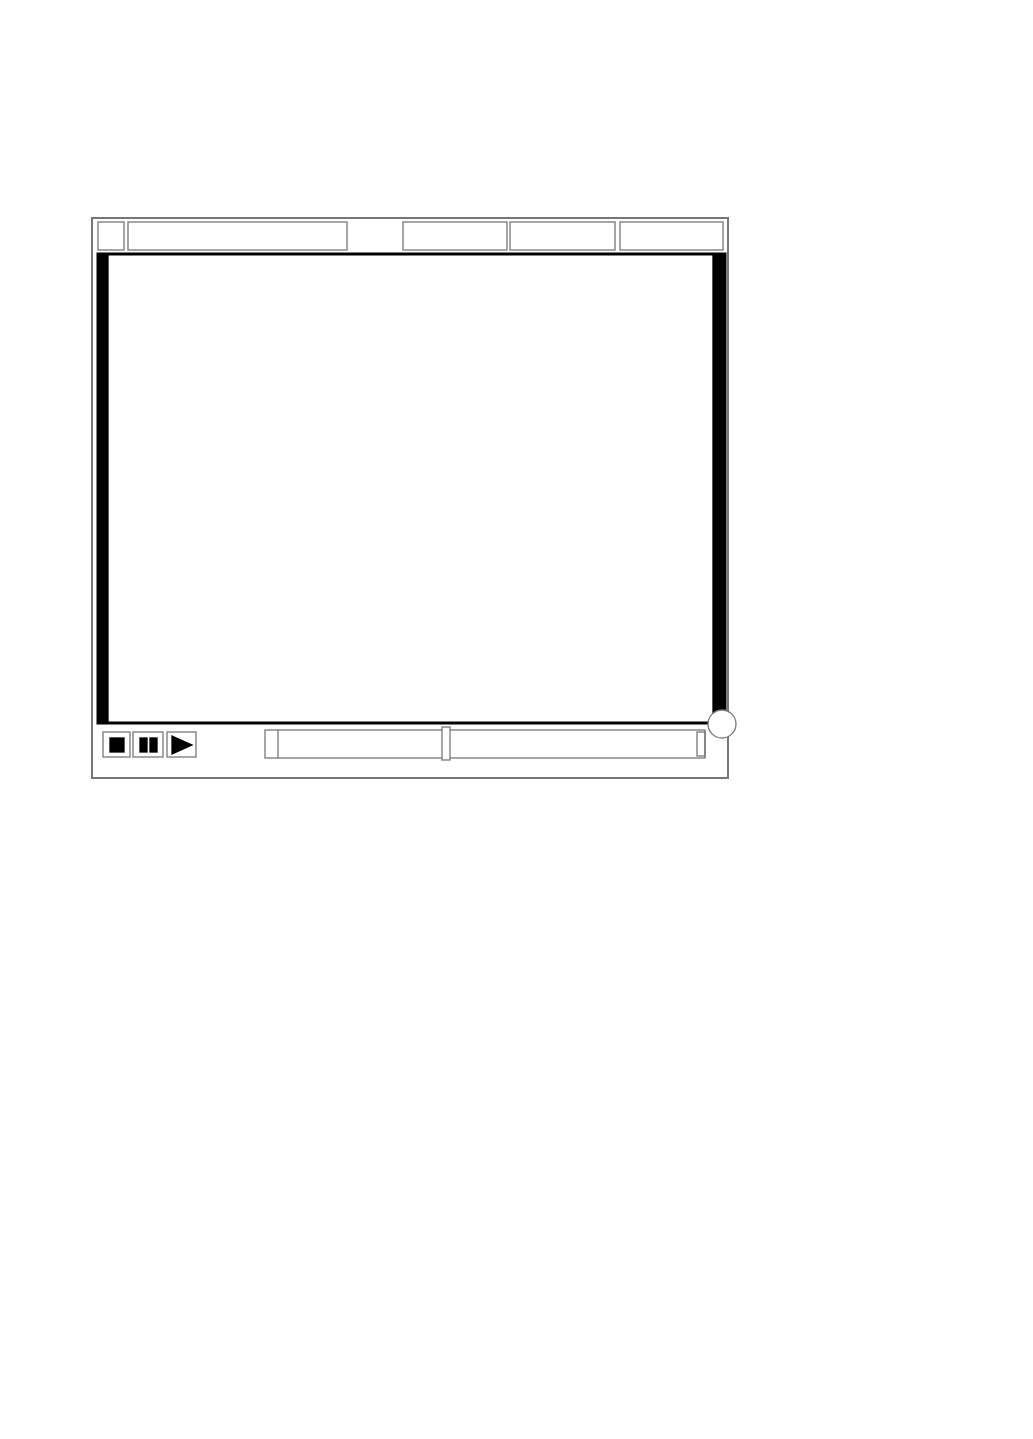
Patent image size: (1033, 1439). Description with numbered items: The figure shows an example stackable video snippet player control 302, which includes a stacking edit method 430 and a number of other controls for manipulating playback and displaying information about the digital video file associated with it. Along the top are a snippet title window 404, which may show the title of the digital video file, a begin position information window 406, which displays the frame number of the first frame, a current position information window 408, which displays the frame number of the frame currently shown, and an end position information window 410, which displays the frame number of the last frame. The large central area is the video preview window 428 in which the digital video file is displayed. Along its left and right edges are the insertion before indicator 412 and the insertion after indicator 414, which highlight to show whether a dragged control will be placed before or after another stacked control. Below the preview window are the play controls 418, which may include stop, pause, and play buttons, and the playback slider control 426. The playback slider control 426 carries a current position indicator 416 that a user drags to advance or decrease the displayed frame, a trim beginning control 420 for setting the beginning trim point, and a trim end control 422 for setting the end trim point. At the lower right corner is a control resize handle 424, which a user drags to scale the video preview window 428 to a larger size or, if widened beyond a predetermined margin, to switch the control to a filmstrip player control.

The stackable video snippet player control 302 is at (346, 220).
The stacking edit method 430 is at (509, 168).
The snippet title window 404 is at (294, 348).
The begin position information window 406 is at (487, 251).
The current position information window 408 is at (585, 230).
The end position information window 410 is at (675, 243).
The insertion before indicator 412 is at (330, 520).
The insertion after indicator 414 is at (713, 517).
The current position indicator 416 is at (485, 680).
The play controls 418 is at (155, 757).
The trim beginning control 420 is at (270, 757).
The trim end control 422 is at (698, 753).
The control resize handle 424 is at (726, 716).
The playback slider control 426 is at (518, 758).
The video preview window 428 is at (697, 710).